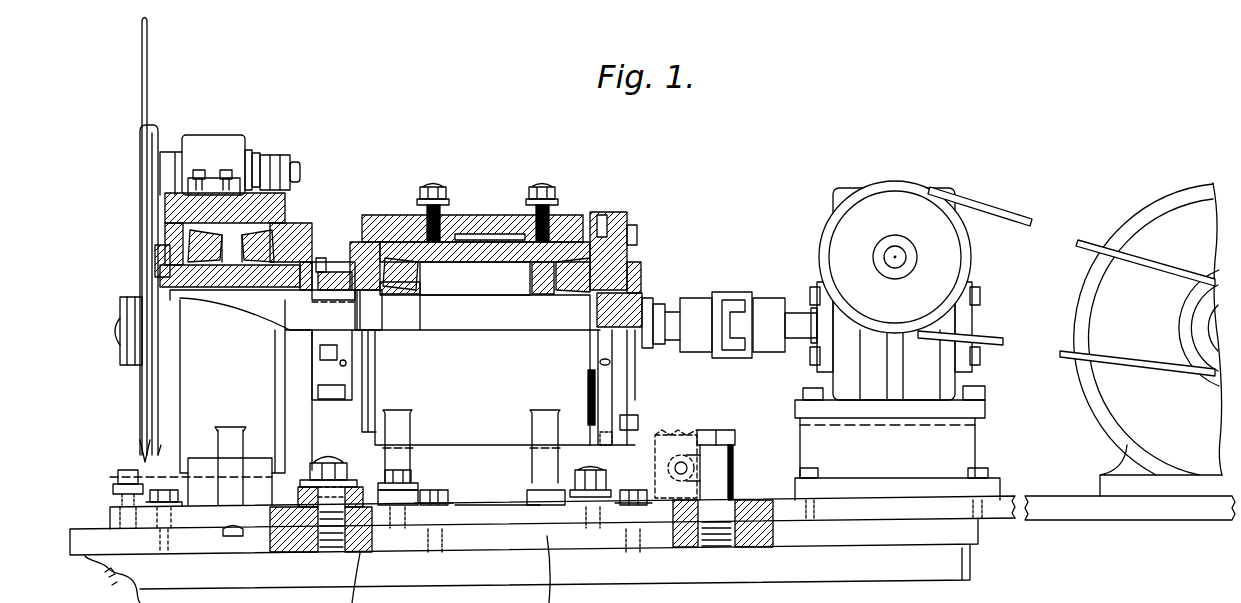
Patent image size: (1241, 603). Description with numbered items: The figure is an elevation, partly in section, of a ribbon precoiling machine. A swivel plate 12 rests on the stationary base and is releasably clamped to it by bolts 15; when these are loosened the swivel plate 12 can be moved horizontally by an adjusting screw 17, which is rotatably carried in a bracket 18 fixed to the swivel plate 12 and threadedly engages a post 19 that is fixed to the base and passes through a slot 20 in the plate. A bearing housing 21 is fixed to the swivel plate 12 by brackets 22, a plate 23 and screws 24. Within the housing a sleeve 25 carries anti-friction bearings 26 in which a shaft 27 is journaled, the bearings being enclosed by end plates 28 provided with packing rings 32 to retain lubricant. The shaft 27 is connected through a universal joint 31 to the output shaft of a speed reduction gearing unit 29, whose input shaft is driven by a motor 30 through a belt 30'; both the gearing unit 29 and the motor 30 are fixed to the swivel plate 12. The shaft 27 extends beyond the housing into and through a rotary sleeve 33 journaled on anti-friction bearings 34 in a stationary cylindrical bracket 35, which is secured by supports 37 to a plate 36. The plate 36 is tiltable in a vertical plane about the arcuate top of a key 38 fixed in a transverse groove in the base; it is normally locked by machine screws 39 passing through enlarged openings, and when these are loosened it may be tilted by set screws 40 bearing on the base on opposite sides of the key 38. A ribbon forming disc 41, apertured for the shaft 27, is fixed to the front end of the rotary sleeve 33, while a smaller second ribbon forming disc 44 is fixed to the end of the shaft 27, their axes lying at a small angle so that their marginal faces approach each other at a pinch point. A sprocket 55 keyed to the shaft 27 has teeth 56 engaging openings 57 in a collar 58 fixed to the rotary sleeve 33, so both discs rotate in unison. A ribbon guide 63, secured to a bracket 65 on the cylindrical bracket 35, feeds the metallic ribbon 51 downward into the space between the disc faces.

The swivel plate 12 is at (982, 516).
The bolts 15 is at (118, 312).
The adjusting screw 17 is at (683, 455).
The bracket 18 is at (658, 458).
The post 19 is at (738, 540).
The slot 20 is at (742, 496).
The bearing housing 21 is at (384, 242).
The brackets 22 is at (392, 470).
The plate 23 is at (489, 503).
The screws 24 is at (408, 488).
The sleeve 25 is at (487, 240).
The anti-friction bearings 26 is at (421, 279).
The shaft 27 is at (276, 310).
The end plates 28 is at (352, 244).
The speed reduction gearing unit 29 is at (972, 318).
The motor 30 is at (1140, 339).
The belt 30' is at (975, 266).
The universal joint 31 is at (730, 296).
The packing rings 32 is at (668, 271).
The rotary sleeve 33 is at (236, 286).
The anti-friction bearings 34 is at (231, 246).
The stationary cylindrical bracket 35 is at (272, 212).
The plate 36 is at (190, 522).
The supports 37 is at (234, 457).
The key 38 is at (231, 537).
The machine screws 39 is at (158, 490).
The set screws 40 is at (120, 483).
The ribbon forming disc 41 is at (160, 268).
The second ribbon forming disc 44 is at (145, 389).
The metallic ribbon 51 is at (142, 94).
The sprocket 55 is at (338, 288).
The teeth 56 is at (321, 258).
The openings 57 is at (331, 262).
The collar 58 is at (344, 397).
The ribbon guide 63 is at (156, 128).
The bracket 65 is at (218, 135).